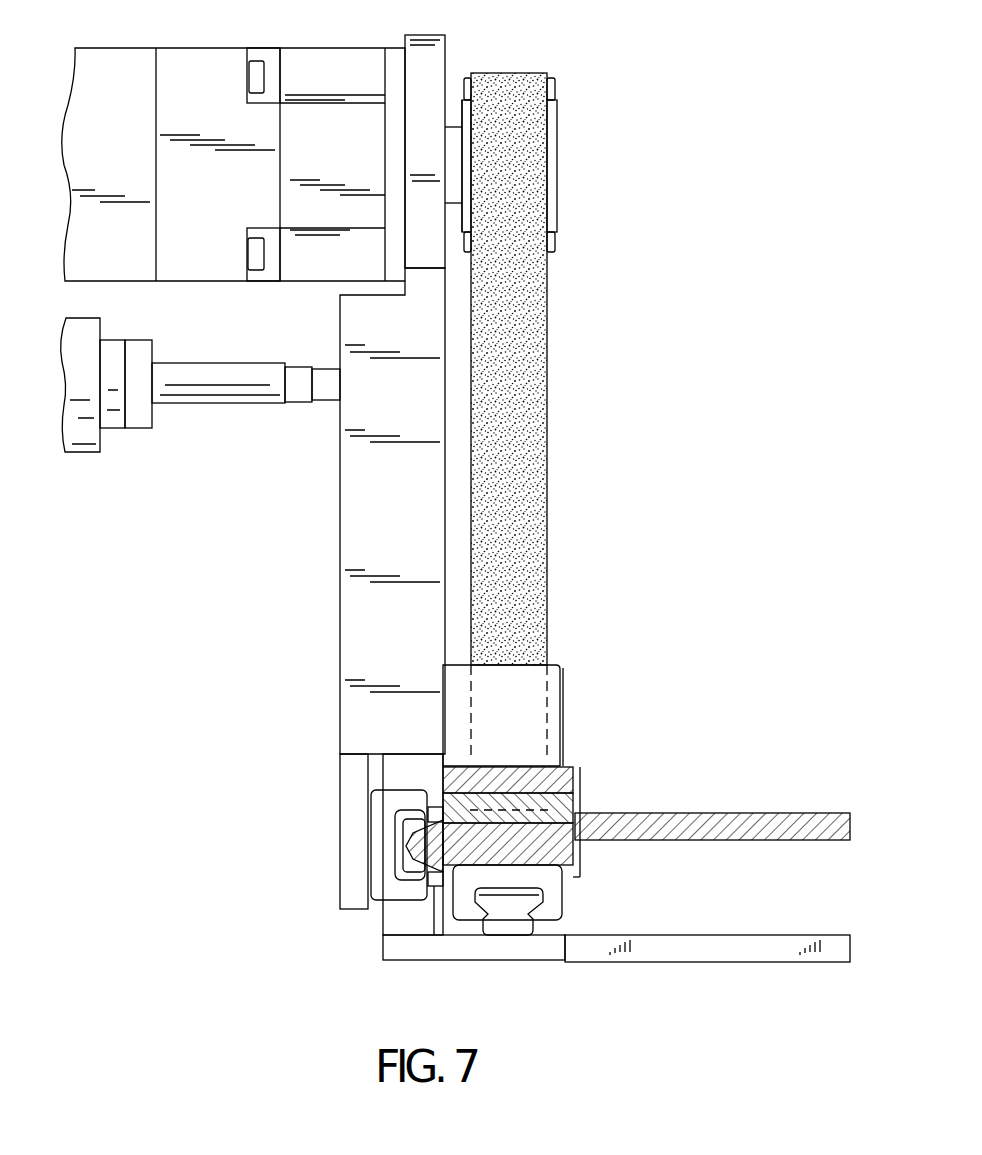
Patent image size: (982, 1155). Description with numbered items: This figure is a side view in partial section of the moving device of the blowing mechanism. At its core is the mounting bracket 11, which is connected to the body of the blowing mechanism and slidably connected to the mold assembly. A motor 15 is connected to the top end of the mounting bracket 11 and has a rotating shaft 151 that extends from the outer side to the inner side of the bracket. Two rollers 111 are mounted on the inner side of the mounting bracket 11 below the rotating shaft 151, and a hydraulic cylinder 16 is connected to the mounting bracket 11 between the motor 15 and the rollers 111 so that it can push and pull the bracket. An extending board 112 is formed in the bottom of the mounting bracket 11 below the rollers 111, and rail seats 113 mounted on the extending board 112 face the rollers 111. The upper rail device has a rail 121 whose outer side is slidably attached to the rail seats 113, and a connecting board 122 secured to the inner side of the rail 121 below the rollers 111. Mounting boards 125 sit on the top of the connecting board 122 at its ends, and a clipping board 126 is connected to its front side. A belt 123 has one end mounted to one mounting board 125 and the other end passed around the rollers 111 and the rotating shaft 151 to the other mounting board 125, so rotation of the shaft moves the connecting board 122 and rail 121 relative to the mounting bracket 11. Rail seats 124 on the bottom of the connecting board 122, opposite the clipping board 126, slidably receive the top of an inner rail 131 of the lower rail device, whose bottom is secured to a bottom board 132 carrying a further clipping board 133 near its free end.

The mounting bracket 11 is at (372, 552).
The motor 15 is at (253, 158).
The hydraulic cylinder 16 is at (326, 392).
The rollers 111 is at (555, 692).
The extending board 112 is at (347, 873).
The rail seats 113 is at (398, 888).
The rail 121 is at (410, 830).
The connecting board 122 is at (565, 850).
The belt 123 is at (520, 352).
The rail seats 124 is at (552, 905).
The mounting boards 125 is at (565, 784).
The clipping board 126 is at (787, 820).
The inner rail 131 is at (495, 925).
The bottom board 132 is at (500, 950).
The clipping board 133 is at (730, 950).
The rotating shaft 151 is at (452, 165).